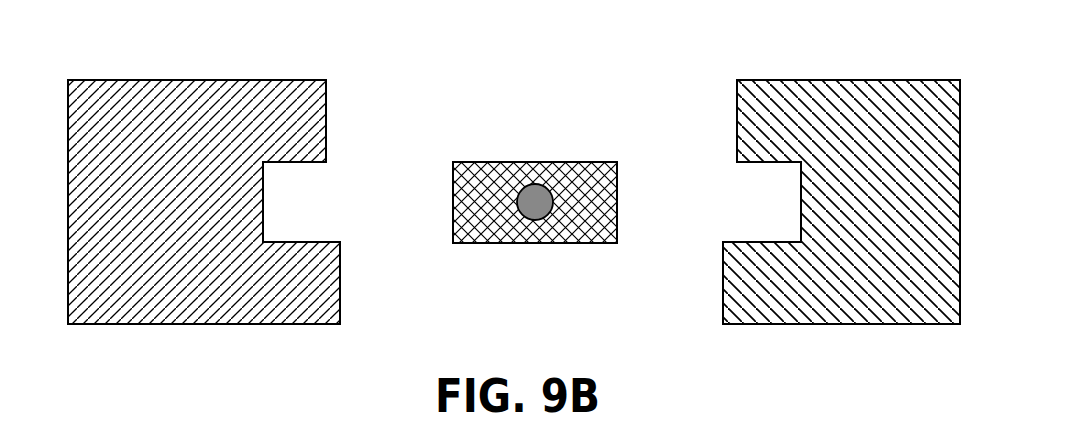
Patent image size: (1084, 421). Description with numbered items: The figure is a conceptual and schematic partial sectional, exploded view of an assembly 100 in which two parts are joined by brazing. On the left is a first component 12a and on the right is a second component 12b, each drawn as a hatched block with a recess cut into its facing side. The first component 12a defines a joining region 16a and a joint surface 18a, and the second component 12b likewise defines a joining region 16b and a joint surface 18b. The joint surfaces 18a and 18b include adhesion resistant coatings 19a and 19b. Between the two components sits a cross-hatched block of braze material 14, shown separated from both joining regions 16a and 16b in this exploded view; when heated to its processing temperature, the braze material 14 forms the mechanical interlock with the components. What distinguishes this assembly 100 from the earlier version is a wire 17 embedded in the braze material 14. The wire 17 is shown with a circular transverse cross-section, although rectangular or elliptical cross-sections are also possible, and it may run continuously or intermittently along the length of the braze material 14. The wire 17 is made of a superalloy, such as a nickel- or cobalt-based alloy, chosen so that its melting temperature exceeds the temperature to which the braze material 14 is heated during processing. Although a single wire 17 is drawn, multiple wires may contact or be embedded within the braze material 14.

The assembly 100 is at (122, 47).
The first component 12a is at (135, 325).
The second component 12b is at (867, 325).
The braze material 14 is at (533, 162).
The joining region 16a is at (352, 159).
The joining region 16b is at (708, 159).
The wire 17 is at (551, 191).
The joint surface 18a is at (303, 168).
The joint surface 18b is at (759, 168).
The adhesion resistant coating 19a is at (303, 243).
The adhesion resistant coating 19b is at (758, 243).